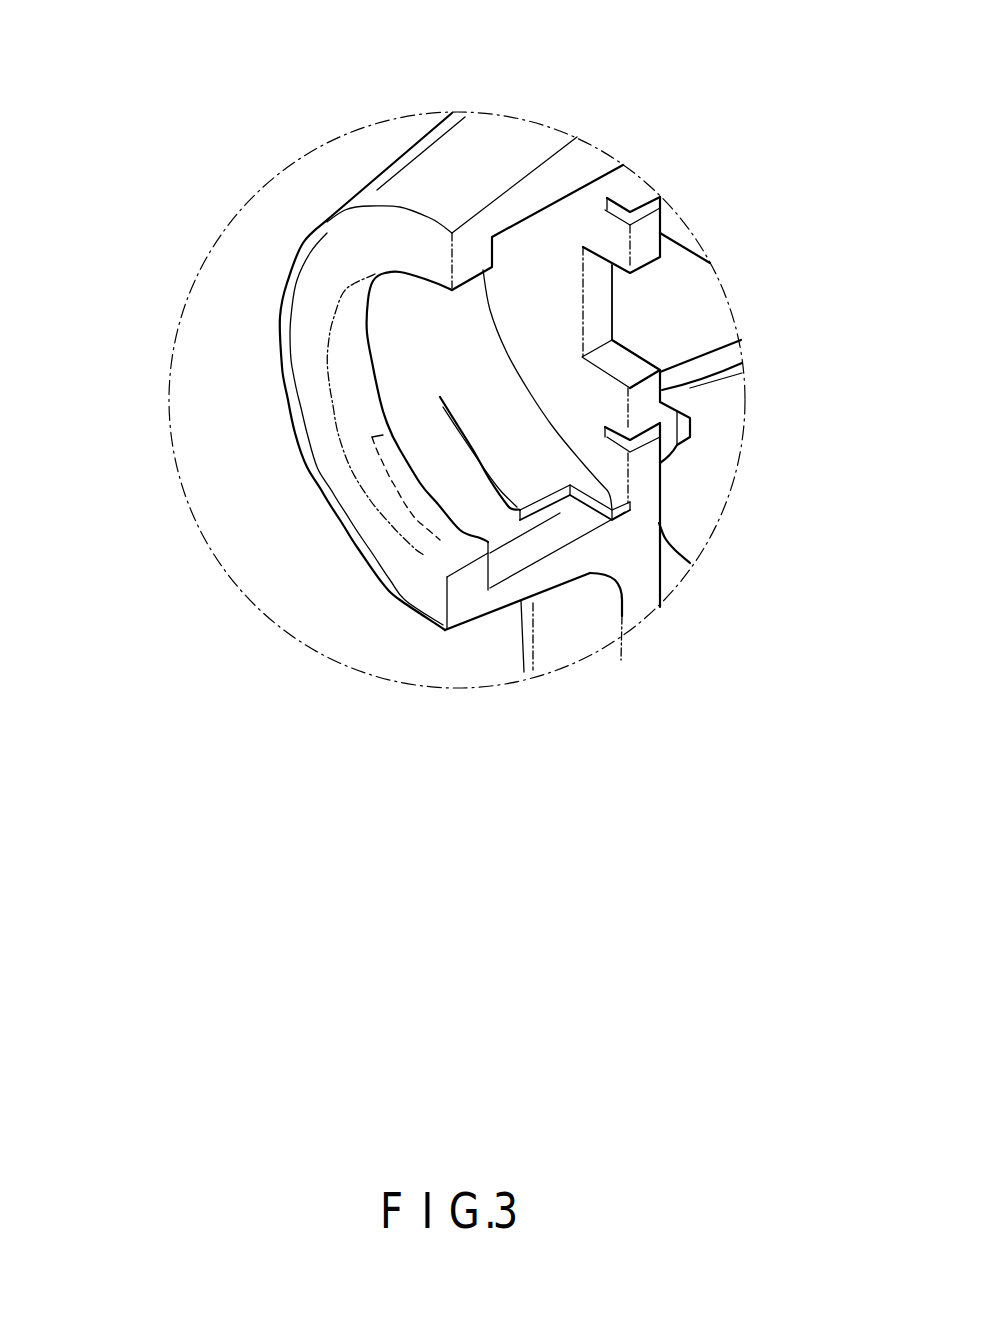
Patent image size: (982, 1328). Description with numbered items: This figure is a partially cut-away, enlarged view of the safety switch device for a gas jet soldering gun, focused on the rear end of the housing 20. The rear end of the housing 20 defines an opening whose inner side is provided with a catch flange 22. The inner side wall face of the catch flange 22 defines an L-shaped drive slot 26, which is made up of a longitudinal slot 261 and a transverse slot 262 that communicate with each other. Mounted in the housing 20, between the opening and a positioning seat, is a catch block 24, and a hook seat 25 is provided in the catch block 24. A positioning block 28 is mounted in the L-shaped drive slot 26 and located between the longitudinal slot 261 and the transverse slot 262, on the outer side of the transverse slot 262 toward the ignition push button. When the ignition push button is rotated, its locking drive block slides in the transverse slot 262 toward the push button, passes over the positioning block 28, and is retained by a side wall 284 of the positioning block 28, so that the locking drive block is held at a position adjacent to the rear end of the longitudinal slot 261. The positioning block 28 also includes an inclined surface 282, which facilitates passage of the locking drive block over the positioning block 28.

The housing 20 is at (422, 177).
The catch flange 22 is at (338, 368).
The catch block 24 is at (547, 305).
The hook seat 25 is at (620, 205).
The L-shaped drive slot 26 is at (513, 552).
The longitudinal slot 261 is at (572, 520).
The transverse slot 262 is at (427, 455).
The positioning block 28 is at (421, 527).
The inclined surface 282 is at (430, 562).
The side wall 284 is at (477, 570).